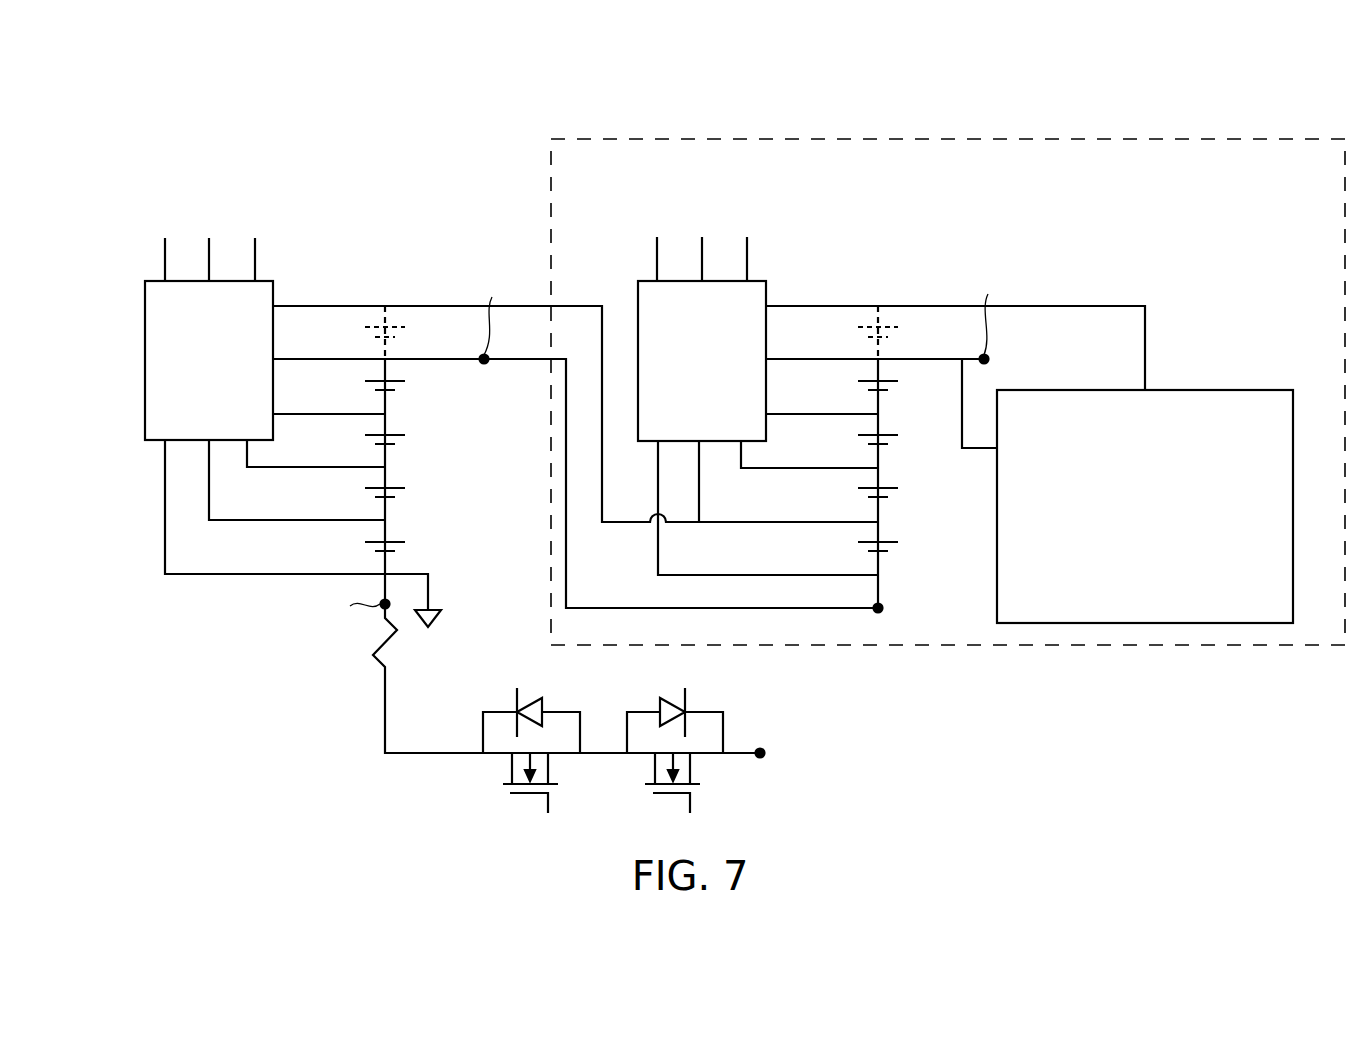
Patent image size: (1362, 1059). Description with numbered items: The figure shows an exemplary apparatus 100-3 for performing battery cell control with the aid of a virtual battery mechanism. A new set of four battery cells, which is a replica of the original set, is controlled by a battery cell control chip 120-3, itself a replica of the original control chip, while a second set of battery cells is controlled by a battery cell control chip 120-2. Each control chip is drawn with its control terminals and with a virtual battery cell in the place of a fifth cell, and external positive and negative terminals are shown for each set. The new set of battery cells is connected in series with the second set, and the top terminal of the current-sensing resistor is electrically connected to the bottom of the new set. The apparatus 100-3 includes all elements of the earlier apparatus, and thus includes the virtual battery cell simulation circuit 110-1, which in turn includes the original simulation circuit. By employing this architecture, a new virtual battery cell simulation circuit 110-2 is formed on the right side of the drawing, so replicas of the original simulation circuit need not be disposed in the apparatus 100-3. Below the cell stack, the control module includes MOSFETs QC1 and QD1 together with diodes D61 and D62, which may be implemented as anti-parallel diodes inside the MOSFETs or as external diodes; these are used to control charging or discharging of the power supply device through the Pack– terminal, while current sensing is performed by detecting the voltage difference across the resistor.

The apparatus 100-3 is at (318, 143).
The battery cell control chip 120-3 is at (145, 307).
The battery cell control chip 120-2 is at (638, 307).
The virtual battery cell simulation circuit 110-2 is at (1278, 139).
The virtual battery cell simulation circuit 110-1 is at (1232, 390).
The diode D61 is at (531, 707).
The diode D62 is at (675, 707).
The MOSFET QC1 is at (530, 797).
The MOSFET QD1 is at (672, 797).